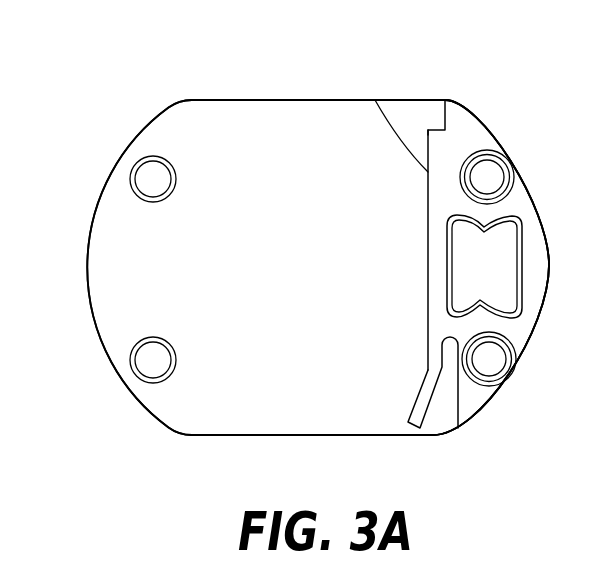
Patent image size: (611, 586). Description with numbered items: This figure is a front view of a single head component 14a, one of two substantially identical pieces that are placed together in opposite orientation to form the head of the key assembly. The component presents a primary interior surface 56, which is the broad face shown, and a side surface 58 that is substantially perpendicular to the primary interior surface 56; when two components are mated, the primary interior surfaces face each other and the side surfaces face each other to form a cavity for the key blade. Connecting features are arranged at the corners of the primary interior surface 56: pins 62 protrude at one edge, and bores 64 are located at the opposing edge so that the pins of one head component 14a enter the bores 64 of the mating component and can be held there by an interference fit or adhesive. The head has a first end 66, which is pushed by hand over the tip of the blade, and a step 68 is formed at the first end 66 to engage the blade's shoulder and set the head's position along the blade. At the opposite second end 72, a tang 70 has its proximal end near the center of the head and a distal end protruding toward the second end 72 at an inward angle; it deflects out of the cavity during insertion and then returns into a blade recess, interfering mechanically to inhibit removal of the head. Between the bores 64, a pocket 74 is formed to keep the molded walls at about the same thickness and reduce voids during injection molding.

The head component 14a is at (472, 78).
The primary interior surface 56 is at (282, 132).
The side surface 58 is at (375, 100).
The pins 62 is at (148, 167).
The bores 64 is at (492, 178).
The first end 66 is at (481, 98).
The step 68 is at (433, 127).
The tang 70 is at (423, 413).
The second end 72 is at (487, 414).
The pocket 74 is at (503, 258).